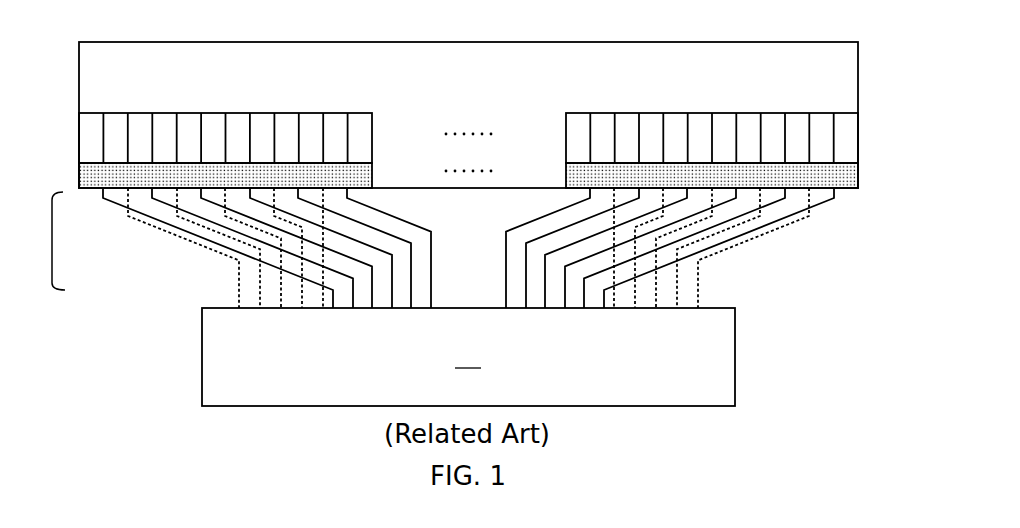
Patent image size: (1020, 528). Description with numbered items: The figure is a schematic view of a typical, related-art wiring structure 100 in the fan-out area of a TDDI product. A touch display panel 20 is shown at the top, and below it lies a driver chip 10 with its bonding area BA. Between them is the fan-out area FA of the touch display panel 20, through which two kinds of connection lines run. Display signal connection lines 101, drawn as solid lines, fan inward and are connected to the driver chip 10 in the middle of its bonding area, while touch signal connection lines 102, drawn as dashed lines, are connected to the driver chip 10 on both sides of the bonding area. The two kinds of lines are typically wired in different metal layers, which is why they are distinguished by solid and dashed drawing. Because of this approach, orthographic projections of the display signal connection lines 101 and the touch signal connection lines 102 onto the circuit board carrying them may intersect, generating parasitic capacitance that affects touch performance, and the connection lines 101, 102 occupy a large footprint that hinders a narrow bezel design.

The touch display panel 20 is at (827, 83).
The driver chip 10 is at (711, 358).
The wiring structure 100 is at (477, 267).
The display signal connection lines 101 is at (331, 313).
The touch signal connection lines 102 is at (239, 313).
The fan-out area FA is at (52, 243).